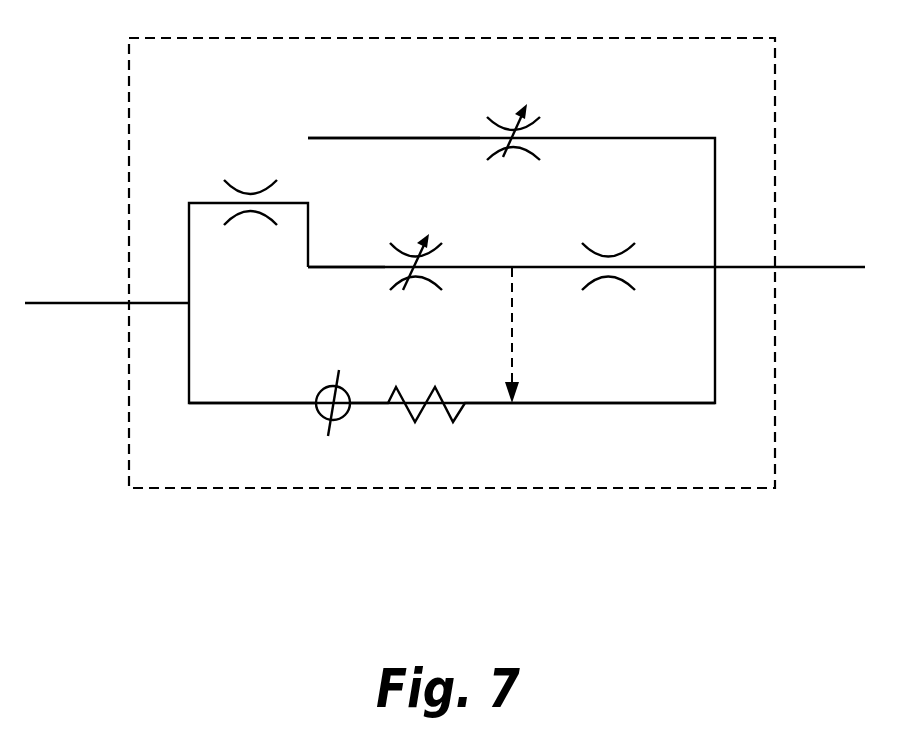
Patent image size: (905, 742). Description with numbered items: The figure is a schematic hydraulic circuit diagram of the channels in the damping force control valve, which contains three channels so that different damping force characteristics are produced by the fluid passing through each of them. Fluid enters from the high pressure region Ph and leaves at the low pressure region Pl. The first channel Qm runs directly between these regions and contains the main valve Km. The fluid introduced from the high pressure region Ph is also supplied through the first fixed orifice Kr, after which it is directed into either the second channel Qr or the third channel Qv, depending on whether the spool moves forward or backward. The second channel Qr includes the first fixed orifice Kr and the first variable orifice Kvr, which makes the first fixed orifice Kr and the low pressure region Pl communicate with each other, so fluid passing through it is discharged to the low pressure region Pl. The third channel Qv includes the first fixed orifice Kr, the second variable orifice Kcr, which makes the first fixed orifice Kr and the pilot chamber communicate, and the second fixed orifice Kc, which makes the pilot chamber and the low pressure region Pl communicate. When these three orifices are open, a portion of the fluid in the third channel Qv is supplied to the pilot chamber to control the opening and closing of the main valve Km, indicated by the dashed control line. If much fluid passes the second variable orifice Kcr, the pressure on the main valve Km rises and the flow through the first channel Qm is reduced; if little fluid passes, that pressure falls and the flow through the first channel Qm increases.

The high pressure region Ph is at (107, 286).
The low pressure region Pl is at (586, 250).
The second channel Qr is at (394, 121).
The third channel Qv is at (334, 284).
The first channel Qm is at (252, 387).
The first fixed orifice Kr is at (250, 181).
The first variable orifice Kvr is at (513, 114).
The second variable orifice Kcr is at (416, 244).
The second fixed orifice Kc is at (608, 244).
The main valve Km is at (335, 422).